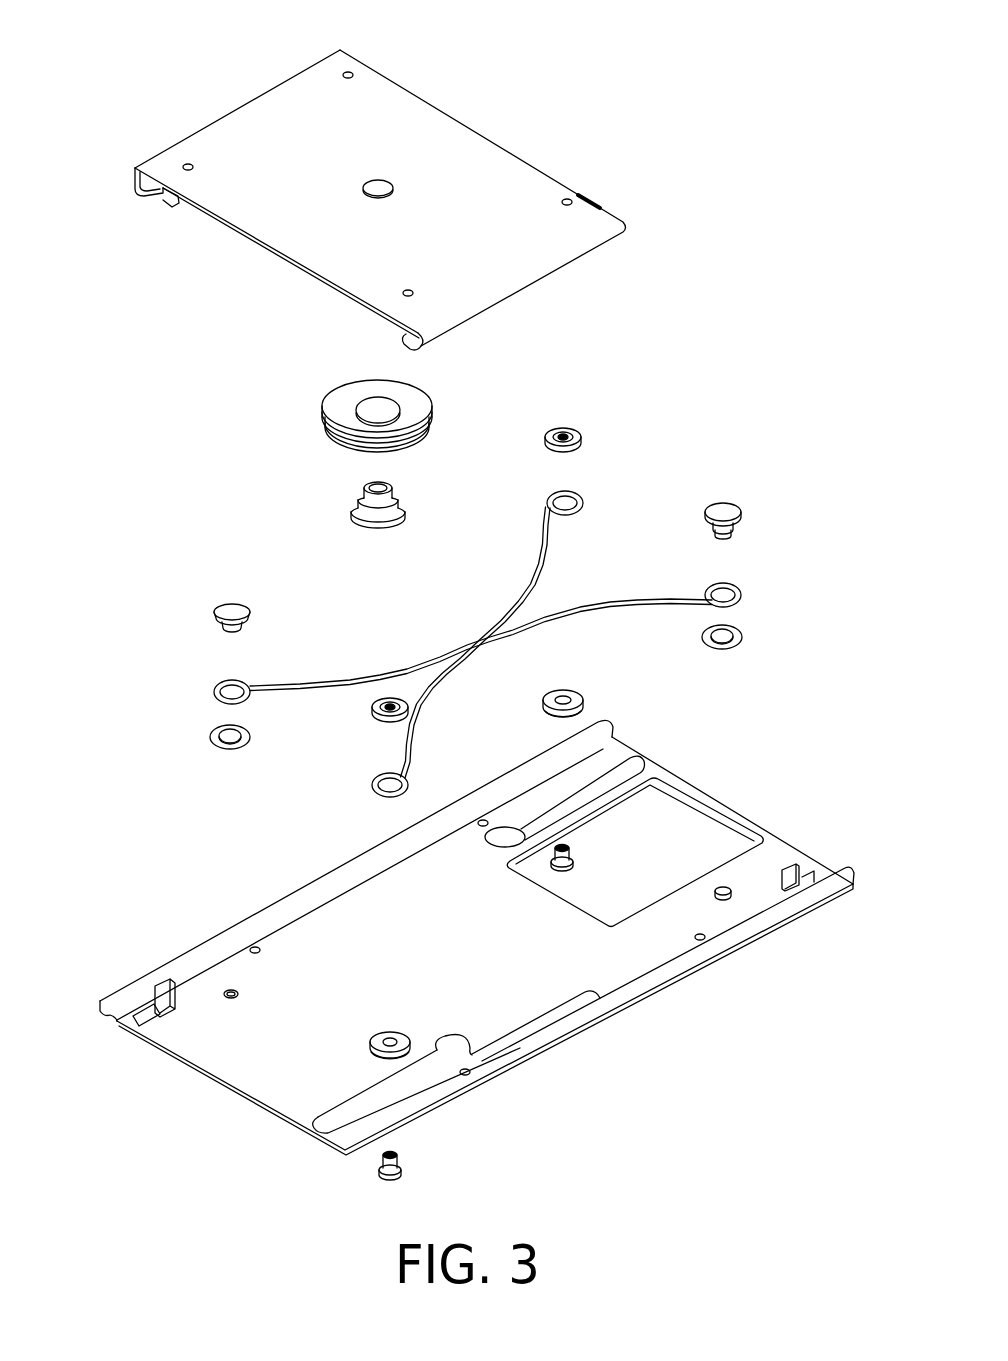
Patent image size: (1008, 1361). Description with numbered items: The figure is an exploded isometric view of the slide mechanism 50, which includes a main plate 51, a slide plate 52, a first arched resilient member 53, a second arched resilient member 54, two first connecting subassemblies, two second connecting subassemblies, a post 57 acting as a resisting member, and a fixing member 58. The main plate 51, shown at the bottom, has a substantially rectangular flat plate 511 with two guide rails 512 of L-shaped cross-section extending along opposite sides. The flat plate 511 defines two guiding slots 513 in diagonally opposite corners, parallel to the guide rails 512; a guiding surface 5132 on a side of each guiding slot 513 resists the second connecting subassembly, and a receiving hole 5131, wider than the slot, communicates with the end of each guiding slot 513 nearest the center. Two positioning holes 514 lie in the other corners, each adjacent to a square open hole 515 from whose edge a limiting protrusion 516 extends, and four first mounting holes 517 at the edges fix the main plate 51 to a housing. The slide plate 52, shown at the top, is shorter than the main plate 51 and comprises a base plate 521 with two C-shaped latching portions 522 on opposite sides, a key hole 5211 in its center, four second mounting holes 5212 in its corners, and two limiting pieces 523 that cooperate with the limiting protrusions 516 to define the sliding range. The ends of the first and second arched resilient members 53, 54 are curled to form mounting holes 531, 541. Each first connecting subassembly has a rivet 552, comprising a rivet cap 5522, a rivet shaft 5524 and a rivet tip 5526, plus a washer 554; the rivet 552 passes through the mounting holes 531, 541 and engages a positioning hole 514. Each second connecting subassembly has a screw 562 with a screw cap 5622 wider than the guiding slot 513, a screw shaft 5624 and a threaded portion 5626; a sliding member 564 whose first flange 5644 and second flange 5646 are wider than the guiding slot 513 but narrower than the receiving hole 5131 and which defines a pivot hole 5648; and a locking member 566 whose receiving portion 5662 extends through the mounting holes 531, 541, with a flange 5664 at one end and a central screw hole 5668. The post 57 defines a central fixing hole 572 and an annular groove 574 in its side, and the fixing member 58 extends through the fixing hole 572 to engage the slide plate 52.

The slide mechanism 50 is at (617, 73).
The main plate 51 is at (761, 800).
The flat plate 511 is at (242, 1068).
The guide rails 512 is at (135, 993).
The guiding slots 513 is at (330, 1137).
The receiving hole 5131 is at (458, 1052).
The guiding surface 5132 is at (577, 786).
The positioning holes 514 is at (723, 900).
The square open holes 515 is at (812, 870).
The limiting protrusion 516 is at (784, 888).
The first mounting holes 517 is at (700, 941).
The slide plate 52 is at (563, 150).
The base plate 521 is at (290, 228).
The key hole 5211 is at (382, 184).
The second mounting holes 5212 is at (188, 163).
The C-shaped latching portions 522 is at (133, 184).
The limiting pieces 523 is at (167, 198).
The first arched resilient member 53 is at (618, 606).
The mounting hole 531 is at (730, 596).
The second arched resilient member 54 is at (545, 580).
The mounting hole 541 is at (565, 500).
The rivet 552 is at (832, 470).
The rivet cap 5522 is at (722, 506).
The rivet shaft 5524 is at (736, 526).
The rivet tip 5526 is at (723, 536).
The washer 554 is at (738, 640).
The screw 562 is at (507, 1128).
The screw cap 5622 is at (393, 1180).
The screw shaft 5624 is at (398, 1170).
The threaded portion 5626 is at (397, 1156).
The sliding member 564 is at (392, 1024).
The first flange 5644 is at (383, 1038).
The second flange 5646 is at (380, 1053).
The pivot hole 5648 is at (393, 1040).
The locking member 566 is at (295, 722).
The receiving portion 5662 is at (392, 786).
The flange 5664 is at (376, 712).
The screw hole 5668 is at (390, 703).
The post 57 is at (338, 410).
The fixing hole 572 is at (380, 412).
The annular groove 574 is at (350, 447).
The fixing member 58 is at (352, 512).